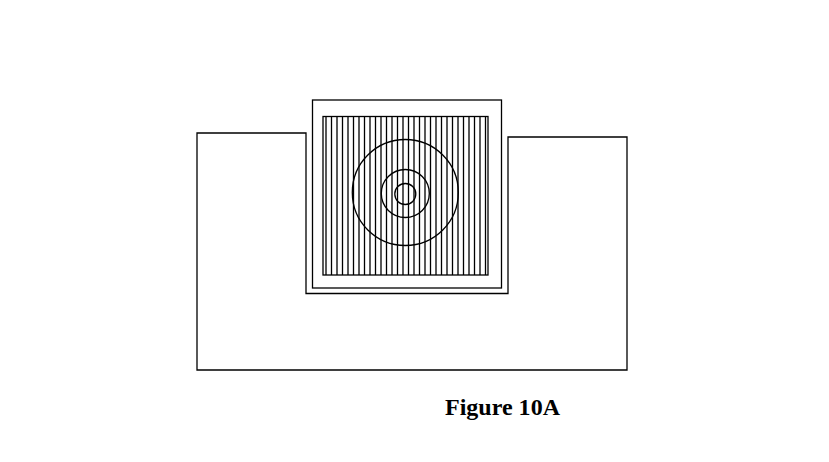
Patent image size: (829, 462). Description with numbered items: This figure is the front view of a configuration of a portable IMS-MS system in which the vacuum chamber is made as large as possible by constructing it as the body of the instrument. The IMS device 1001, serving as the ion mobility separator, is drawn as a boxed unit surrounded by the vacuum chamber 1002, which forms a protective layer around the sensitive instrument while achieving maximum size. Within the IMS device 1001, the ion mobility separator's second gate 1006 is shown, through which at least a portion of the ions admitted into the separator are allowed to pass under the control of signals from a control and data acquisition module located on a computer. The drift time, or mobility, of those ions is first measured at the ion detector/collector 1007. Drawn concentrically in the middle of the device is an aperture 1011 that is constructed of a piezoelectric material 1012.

The IMS device 1001 is at (362, 100).
The vacuum chamber 1002 is at (590, 253).
The second gate 1006 is at (323, 244).
The ion detector/collector 1007 is at (358, 216).
The aperture 1011 is at (416, 192).
The piezoelectric material 1012 is at (396, 194).